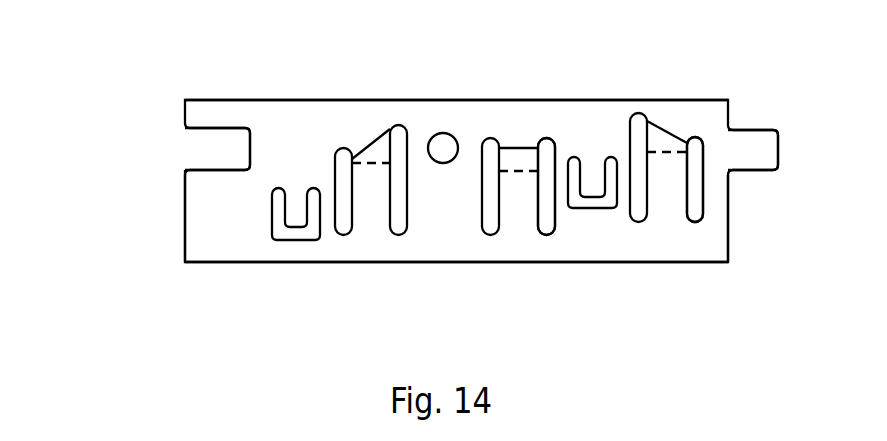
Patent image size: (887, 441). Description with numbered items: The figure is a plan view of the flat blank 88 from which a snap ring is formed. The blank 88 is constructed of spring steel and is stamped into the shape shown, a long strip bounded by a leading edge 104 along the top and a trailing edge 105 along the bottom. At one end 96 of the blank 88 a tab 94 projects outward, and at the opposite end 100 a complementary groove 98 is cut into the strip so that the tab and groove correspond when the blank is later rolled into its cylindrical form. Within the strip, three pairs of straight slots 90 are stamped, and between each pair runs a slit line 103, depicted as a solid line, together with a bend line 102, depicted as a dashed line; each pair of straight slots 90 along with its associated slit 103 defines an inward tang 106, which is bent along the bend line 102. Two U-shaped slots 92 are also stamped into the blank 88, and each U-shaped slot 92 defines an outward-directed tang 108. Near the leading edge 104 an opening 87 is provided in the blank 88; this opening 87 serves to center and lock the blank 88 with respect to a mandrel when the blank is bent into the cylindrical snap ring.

The flat blank 88 is at (108, 115).
The complementary groove 98 is at (200, 152).
The opposite end 100 is at (185, 213).
The leading edge 104 is at (327, 100).
The trailing edge 105 is at (590, 263).
The one end 96 is at (728, 231).
The tab 94 is at (778, 150).
The opening 87 is at (443, 145).
The U-shaped slot 92 is at (297, 240).
The bend line 102 is at (515, 170).
The slit line 103 is at (667, 132).
The straight slot 90 is at (547, 232).
The inward tang 106 is at (386, 203).
The outward-directed tang 108 is at (293, 215).